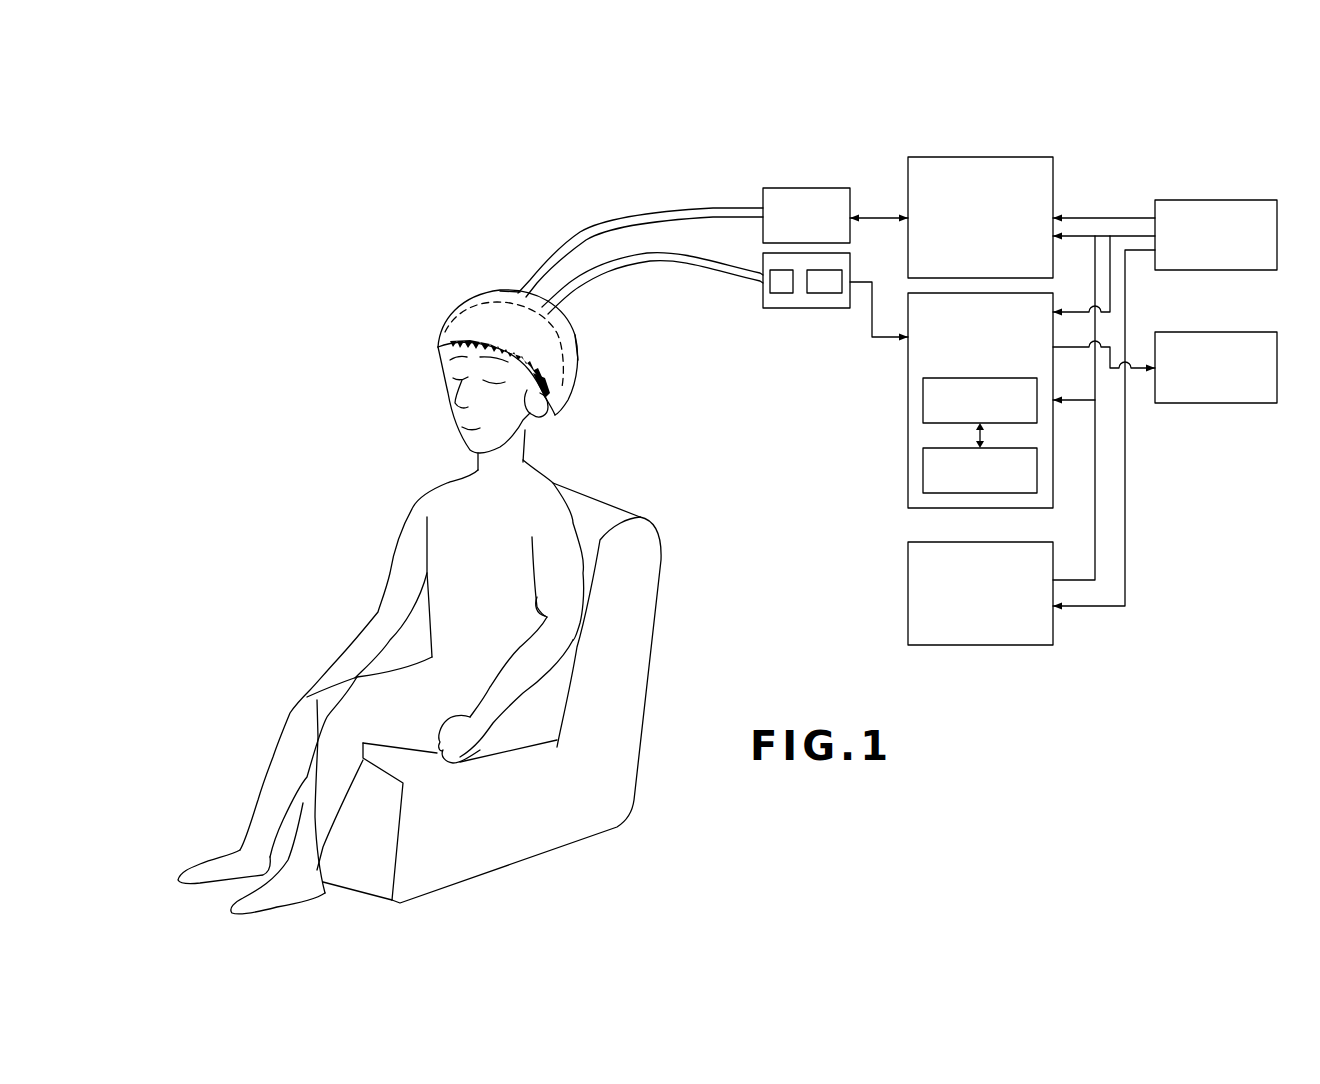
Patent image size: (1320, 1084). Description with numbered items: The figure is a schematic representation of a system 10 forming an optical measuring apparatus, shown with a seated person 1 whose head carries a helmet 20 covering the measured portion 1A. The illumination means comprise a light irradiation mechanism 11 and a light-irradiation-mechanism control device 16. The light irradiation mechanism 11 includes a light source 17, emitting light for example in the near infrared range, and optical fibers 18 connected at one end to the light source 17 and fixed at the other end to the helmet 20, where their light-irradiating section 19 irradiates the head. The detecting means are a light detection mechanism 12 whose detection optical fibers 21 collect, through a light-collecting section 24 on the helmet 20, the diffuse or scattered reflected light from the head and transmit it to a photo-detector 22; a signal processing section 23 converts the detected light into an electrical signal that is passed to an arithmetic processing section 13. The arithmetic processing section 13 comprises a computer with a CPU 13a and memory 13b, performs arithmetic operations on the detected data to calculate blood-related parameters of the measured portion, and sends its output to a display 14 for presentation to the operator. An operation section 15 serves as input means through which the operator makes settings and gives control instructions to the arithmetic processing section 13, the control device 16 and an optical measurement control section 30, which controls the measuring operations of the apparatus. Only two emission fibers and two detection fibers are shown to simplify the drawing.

The person subject to the measurement 1 is at (366, 527).
The measured portion 1A is at (470, 290).
The system 10 is at (911, 136).
The light irradiation mechanism 11 is at (857, 142).
The light detection mechanism 12 is at (868, 357).
The arithmetic processing section 13 is at (908, 492).
The CPU 13a is at (923, 402).
The memory 13b is at (923, 469).
The display 14 is at (1251, 404).
The operation section 15 is at (1246, 200).
The light-irradiation-mechanism control device 16 is at (1018, 157).
The light source 17 is at (803, 188).
The optical fibers 18 is at (580, 240).
The light-irradiating section 19 is at (510, 283).
The helmet 20 is at (448, 313).
The detection optical fibers 21 is at (585, 282).
The photo-detector 22 is at (783, 293).
The signal processing section 23 is at (825, 293).
The light-collecting section 24 is at (583, 360).
The optical measurement control section 30 is at (1013, 646).